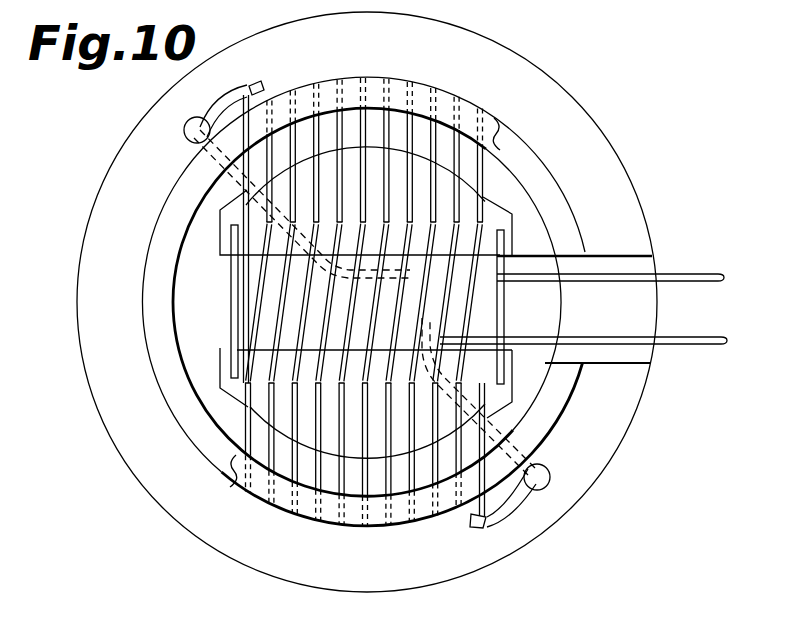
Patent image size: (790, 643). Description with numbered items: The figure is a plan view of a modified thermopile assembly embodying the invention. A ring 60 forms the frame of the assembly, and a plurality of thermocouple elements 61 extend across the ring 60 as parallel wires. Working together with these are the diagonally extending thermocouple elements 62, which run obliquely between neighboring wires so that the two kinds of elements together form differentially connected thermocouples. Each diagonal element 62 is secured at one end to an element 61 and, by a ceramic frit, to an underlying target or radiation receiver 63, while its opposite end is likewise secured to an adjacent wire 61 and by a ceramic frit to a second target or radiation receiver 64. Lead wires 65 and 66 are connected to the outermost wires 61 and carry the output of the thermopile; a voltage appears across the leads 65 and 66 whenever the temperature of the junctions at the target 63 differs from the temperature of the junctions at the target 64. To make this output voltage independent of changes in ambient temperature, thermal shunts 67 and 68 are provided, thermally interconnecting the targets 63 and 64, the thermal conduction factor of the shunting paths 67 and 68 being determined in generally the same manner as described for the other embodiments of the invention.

The ring 60 is at (567, 102).
The thermocouple elements 61 is at (386, 120).
The diagonally extending thermocouple elements 62 is at (257, 315).
The target or radiation receiver 63 is at (505, 220).
The second target or radiation receiver 64 is at (505, 390).
The lead wire 65 is at (670, 277).
The lead wire 66 is at (682, 338).
The thermal shunt 67 is at (235, 275).
The thermal shunt 68 is at (508, 263).